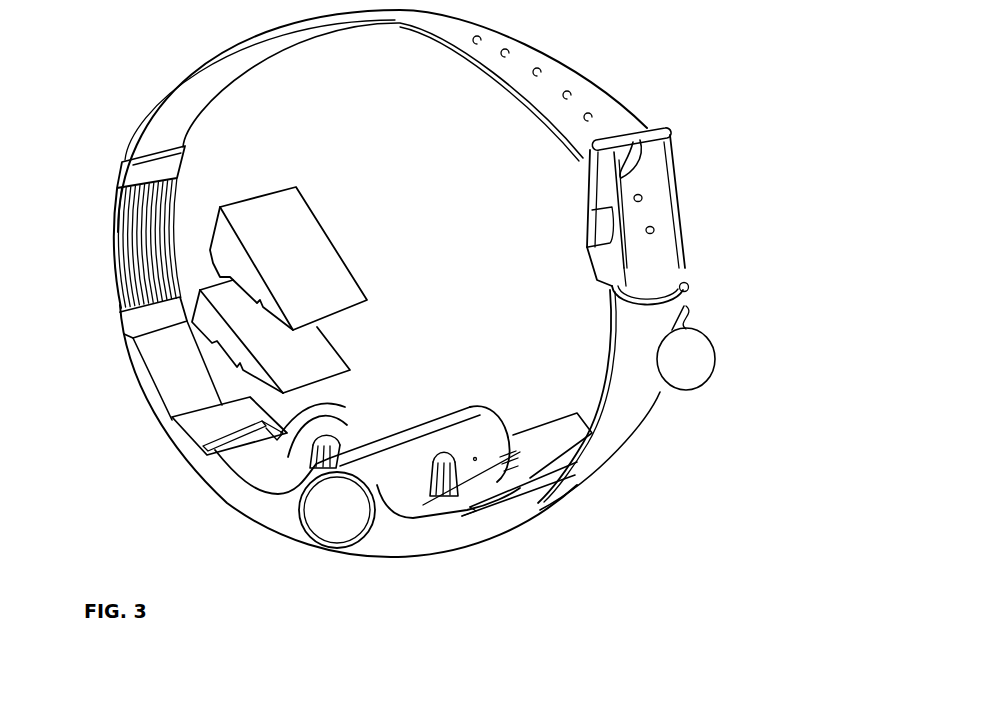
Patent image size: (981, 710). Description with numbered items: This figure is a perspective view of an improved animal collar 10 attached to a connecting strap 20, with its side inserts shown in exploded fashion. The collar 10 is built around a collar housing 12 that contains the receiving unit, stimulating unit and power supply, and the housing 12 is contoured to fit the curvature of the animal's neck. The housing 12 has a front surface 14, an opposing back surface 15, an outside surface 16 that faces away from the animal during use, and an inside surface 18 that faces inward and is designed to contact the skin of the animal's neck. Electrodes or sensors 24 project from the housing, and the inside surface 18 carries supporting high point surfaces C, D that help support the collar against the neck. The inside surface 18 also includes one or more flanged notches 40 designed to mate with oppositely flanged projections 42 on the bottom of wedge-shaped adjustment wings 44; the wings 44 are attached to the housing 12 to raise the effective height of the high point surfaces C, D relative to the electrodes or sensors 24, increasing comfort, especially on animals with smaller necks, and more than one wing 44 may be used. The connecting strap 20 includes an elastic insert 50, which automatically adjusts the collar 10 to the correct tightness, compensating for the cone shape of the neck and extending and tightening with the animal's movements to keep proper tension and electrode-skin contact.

The animal collar 10 is at (679, 100).
The collar housing 12 is at (232, 507).
The front surface 14 is at (395, 542).
The back surface 15 is at (328, 410).
The outside surface 16 is at (533, 503).
The inside surface 18 is at (332, 435).
The connecting strap 20 is at (612, 443).
The electrodes or sensors 24 is at (449, 452).
The flanged notches 40 is at (213, 455).
The flanged projections 42 is at (220, 368).
The adjustment wings 44 is at (315, 268).
The elastic insert 50 is at (130, 247).
The high point surface C is at (475, 457).
The high point surface D is at (213, 420).